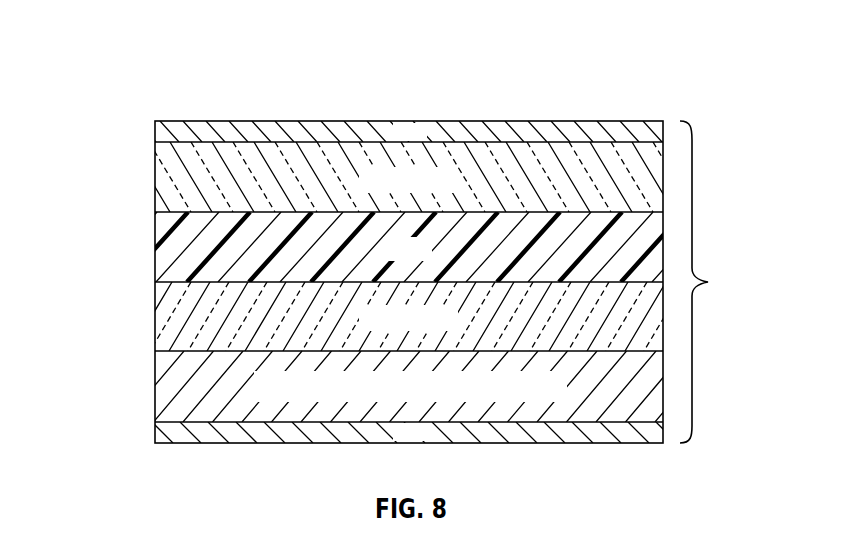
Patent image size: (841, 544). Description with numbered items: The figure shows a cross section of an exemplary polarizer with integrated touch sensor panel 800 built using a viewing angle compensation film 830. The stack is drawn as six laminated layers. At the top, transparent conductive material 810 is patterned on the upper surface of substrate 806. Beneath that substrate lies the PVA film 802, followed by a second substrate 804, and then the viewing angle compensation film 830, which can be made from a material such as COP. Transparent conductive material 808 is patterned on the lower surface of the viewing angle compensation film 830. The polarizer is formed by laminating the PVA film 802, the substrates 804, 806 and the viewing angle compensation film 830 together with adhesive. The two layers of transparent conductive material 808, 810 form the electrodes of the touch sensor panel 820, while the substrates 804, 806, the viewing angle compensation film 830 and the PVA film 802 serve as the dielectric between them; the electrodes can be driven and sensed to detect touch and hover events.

The polarizer with integrated touch sensor panel 800 is at (94, 55).
The transparent conductive material 810 is at (155, 131).
The substrate 806 is at (155, 177).
The PVA film 802 is at (155, 250).
The substrate 804 is at (155, 318).
The viewing angle compensation film 830 is at (155, 387).
The transparent conductive material 808 is at (155, 435).
The touch sensor panel 820 is at (733, 282).